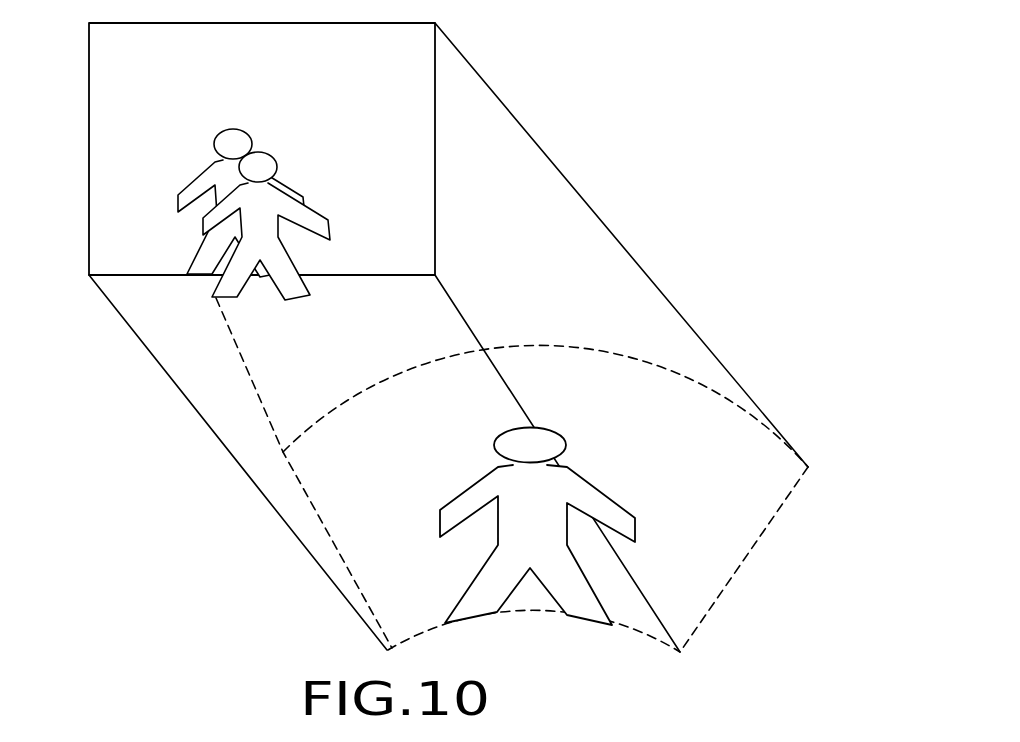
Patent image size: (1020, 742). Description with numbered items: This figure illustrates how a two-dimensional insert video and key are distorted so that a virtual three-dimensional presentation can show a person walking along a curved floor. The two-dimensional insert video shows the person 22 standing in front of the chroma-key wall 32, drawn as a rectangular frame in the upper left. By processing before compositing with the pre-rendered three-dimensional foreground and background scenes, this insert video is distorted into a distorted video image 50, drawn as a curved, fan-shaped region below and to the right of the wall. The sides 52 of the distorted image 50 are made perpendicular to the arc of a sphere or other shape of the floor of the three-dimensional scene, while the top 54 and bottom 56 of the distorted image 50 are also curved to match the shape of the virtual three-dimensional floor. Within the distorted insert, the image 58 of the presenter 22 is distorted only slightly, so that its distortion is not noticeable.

The person 22 is at (267, 237).
The chroma-key wall 32 is at (435, 180).
The distorted video image 50 is at (808, 467).
The sides of the distorted image 52 is at (344, 564).
The top of the distorted image 54 is at (563, 343).
The bottom of the distorted image 56 is at (633, 636).
The image of the presenter 58 is at (593, 483).